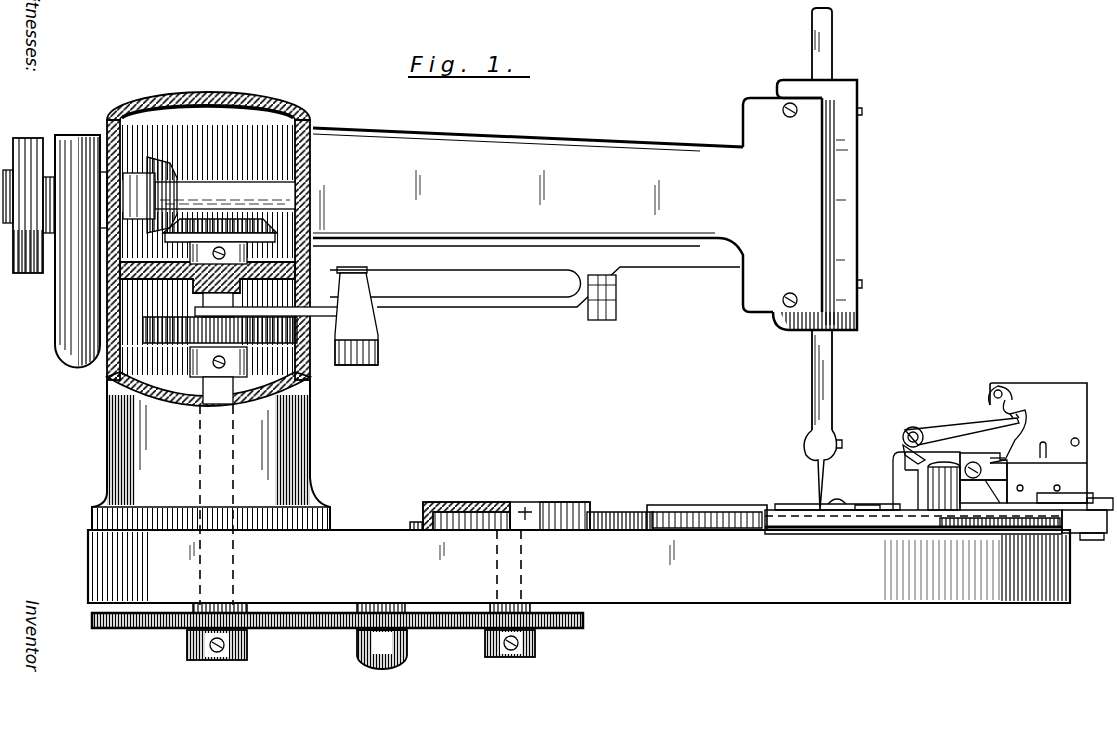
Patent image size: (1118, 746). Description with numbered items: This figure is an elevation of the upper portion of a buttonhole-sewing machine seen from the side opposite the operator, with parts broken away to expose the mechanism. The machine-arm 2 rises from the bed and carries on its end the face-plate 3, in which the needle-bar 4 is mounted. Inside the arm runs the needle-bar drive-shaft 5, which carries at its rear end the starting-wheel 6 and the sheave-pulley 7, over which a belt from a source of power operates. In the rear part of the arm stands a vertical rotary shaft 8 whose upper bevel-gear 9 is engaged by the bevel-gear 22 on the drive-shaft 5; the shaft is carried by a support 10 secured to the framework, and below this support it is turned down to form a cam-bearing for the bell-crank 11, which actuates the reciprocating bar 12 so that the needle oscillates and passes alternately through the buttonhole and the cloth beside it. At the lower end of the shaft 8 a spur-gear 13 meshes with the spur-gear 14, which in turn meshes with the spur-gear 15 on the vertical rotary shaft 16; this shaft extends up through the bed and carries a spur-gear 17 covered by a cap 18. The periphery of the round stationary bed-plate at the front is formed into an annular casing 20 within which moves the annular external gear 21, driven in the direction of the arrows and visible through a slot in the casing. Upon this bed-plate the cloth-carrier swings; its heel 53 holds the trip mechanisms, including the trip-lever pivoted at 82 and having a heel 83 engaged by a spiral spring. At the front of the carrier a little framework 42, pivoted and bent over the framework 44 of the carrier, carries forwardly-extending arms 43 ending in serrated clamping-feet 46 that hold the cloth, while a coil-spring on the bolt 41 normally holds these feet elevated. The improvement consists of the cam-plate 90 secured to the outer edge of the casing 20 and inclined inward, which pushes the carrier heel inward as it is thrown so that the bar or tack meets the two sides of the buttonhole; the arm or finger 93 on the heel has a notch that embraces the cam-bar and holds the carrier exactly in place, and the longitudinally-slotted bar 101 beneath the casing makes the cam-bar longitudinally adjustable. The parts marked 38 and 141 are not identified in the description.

The machine-arm 2 is at (528, 217).
The face-plate 3 is at (846, 208).
The needle-bar 4 is at (832, 383).
The needle-bar drive-shaft 5 is at (222, 190).
The starting-wheel 6 is at (76, 365).
The sheave-pulley 7 is at (26, 282).
The vertical rotary shaft 8 is at (210, 386).
The bevel-gear 9 is at (255, 244).
The support 10 is at (190, 280).
The bell-crank 11 is at (255, 318).
The reciprocating bar 12 is at (655, 265).
The spur-gear 13 is at (292, 630).
The spur-gear 14 is at (418, 632).
The spur-gear 15 is at (572, 632).
The vertical rotary shaft 16 is at (535, 609).
The spur-gear 17 is at (458, 518).
The cap or covering 18 is at (545, 512).
The annular casing 20 is at (792, 522).
The annular external gear 21 is at (722, 527).
The bevel-gear 22 is at (172, 96).
The throat plate 38 is at (868, 510).
The bolt 41 is at (983, 482).
The framework 42 is at (984, 456).
The forwardly-extending arms 43 is at (893, 460).
The framework of the cloth-carrier 44 is at (912, 485).
The clamping-feet 46 is at (803, 510).
The heel of the cloth-carrier 53 is at (1038, 443).
The pivot 82 is at (992, 392).
The heel of the trip-lever 83 is at (1000, 412).
The cam-plate 90 is at (1084, 521).
The arm or finger 93 is at (1095, 500).
The longitudinally-slotted bar 101 is at (1092, 541).
The lever pivot 141 is at (903, 437).